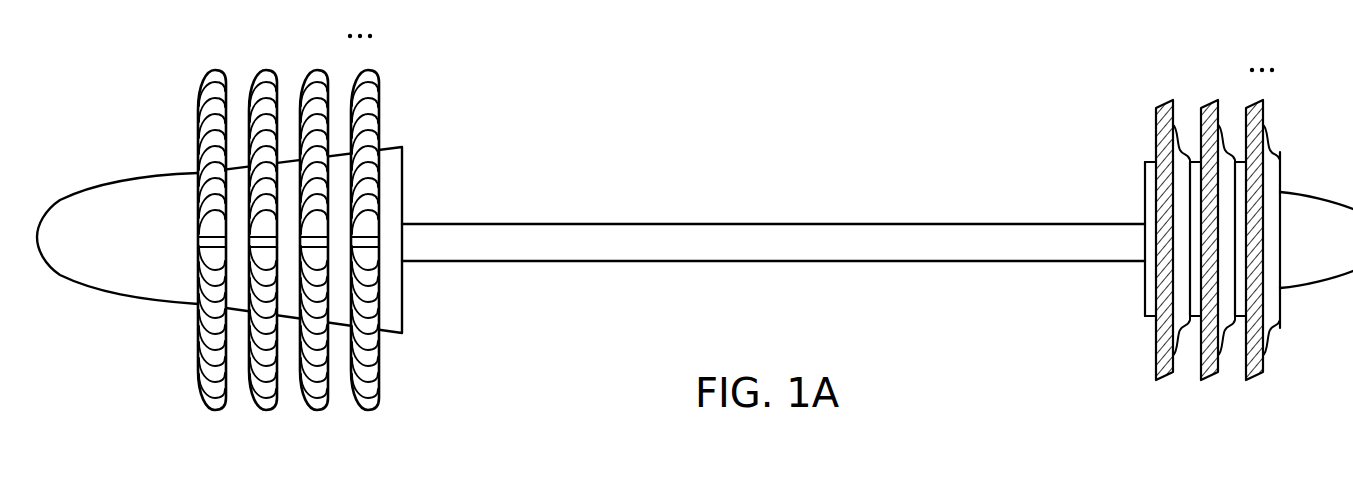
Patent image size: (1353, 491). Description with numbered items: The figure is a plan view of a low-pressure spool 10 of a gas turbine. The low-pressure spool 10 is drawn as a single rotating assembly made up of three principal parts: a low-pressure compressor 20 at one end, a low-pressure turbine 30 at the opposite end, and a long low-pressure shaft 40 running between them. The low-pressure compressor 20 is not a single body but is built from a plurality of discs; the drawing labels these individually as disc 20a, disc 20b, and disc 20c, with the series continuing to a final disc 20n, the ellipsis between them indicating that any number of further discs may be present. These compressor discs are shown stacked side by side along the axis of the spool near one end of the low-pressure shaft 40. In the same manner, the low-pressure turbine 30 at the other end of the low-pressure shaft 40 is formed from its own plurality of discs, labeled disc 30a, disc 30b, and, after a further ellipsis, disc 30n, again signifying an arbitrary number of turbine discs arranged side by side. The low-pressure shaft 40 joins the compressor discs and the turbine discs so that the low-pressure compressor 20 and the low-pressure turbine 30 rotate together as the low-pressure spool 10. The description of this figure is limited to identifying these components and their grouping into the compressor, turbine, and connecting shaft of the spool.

The low-pressure spool 10 is at (853, 84).
The low-pressure compressor 20 is at (304, 240).
The disc 20a is at (209, 70).
The disc 20b is at (261, 71).
The disc 20c is at (313, 71).
The disc 20n is at (365, 72).
The low-pressure turbine 30 is at (1234, 242).
The disc 30a is at (1160, 104).
The disc 30b is at (1206, 104).
The disc 30n is at (1262, 100).
The low-pressure shaft 40 is at (738, 223).